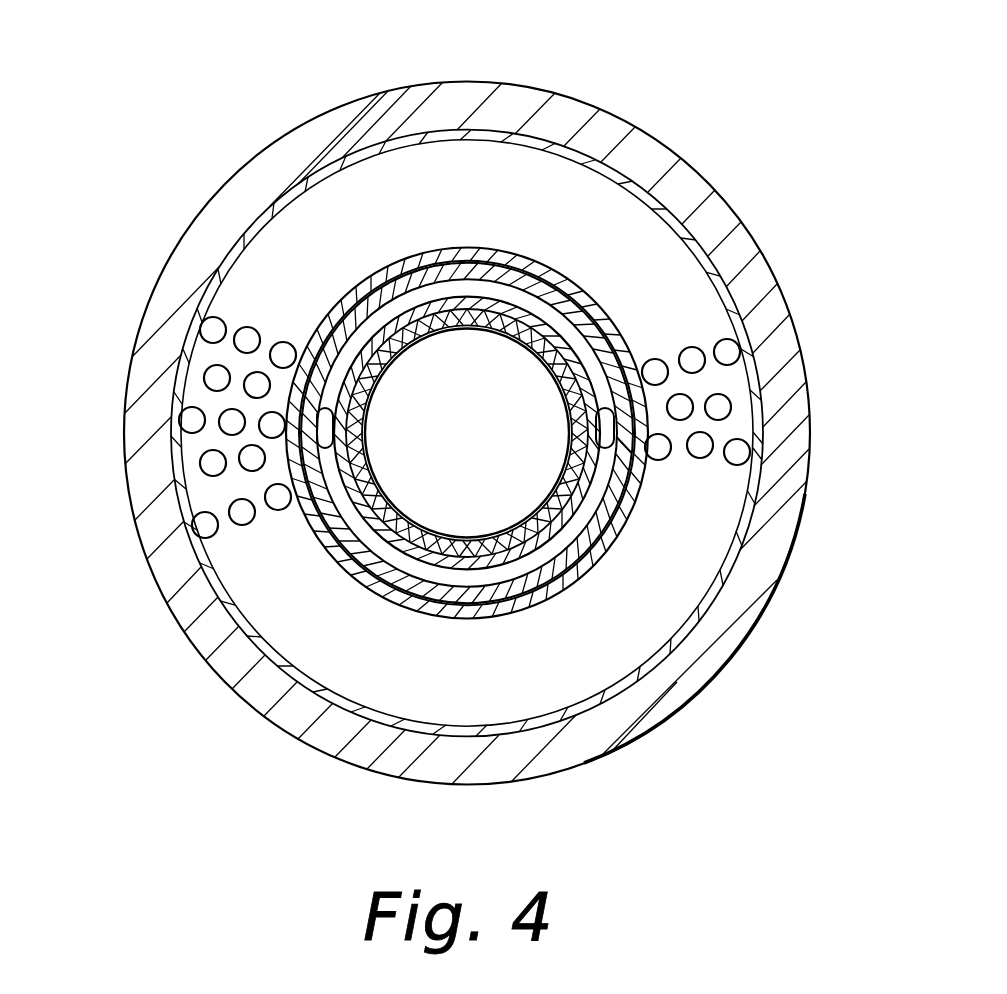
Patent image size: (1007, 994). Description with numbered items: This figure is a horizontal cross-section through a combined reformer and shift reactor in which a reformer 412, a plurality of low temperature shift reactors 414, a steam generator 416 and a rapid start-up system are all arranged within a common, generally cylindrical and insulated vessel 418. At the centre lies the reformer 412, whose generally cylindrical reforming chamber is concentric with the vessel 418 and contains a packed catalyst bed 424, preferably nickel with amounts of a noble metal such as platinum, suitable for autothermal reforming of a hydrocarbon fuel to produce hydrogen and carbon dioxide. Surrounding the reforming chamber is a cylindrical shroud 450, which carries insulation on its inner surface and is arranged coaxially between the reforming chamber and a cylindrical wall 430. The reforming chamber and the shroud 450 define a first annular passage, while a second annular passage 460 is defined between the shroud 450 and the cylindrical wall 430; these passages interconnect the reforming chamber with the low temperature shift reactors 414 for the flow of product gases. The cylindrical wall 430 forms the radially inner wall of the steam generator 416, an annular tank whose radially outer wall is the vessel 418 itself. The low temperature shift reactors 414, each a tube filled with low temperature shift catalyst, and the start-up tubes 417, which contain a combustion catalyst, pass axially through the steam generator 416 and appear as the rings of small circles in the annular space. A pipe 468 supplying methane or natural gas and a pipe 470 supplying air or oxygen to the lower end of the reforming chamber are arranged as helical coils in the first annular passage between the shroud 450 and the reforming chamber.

The reformer 412 is at (553, 350).
The low temperature shift reactors 414 is at (266, 493).
The steam generator 416 is at (757, 502).
The start-up tubes 417 is at (234, 344).
The vessel 418 is at (736, 606).
The packed catalyst bed 424 is at (530, 404).
The cylindrical wall 430 is at (512, 262).
The cylindrical shroud 450 is at (466, 266).
The second annular passage 460 is at (431, 262).
The pipe 468 is at (326, 450).
The pipe 470 is at (602, 450).